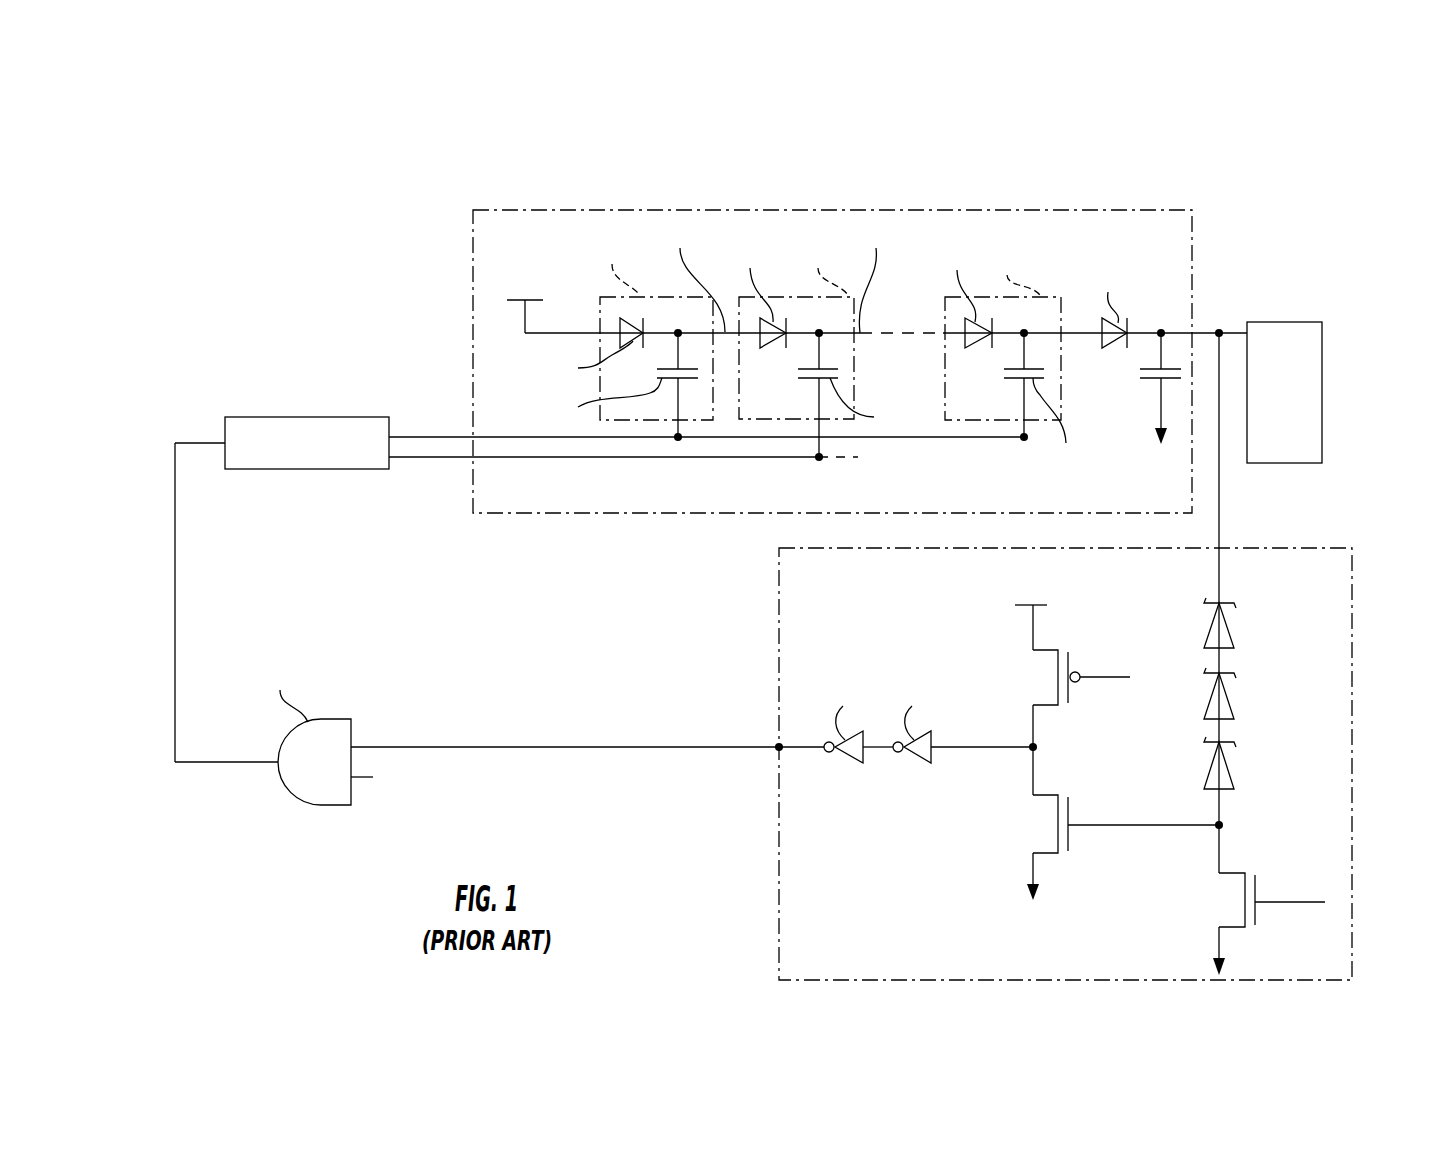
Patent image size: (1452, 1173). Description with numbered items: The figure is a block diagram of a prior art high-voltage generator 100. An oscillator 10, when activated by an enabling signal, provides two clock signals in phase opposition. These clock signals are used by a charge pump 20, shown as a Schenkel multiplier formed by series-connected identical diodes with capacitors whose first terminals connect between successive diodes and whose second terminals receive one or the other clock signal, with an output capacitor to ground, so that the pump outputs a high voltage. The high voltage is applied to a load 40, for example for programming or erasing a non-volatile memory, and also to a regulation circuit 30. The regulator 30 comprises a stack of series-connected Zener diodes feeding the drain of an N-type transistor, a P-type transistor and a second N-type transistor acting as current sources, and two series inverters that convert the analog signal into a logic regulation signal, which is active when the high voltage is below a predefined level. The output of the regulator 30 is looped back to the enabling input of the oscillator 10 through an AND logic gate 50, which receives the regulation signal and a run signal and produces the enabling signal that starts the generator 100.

The high-voltage generator 100 is at (330, 156).
The oscillator 10 is at (293, 415).
The charge pump 20 is at (975, 210).
The regulation circuit 30 is at (1352, 770).
The load 40 is at (1322, 361).
The AND logic gate 50 is at (344, 718).